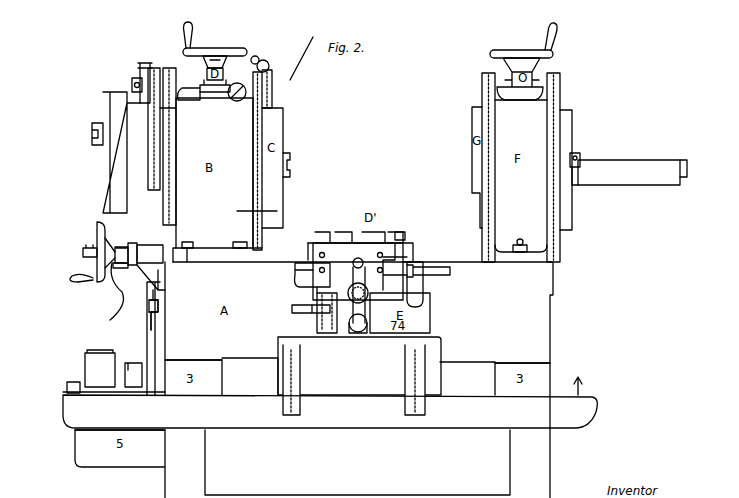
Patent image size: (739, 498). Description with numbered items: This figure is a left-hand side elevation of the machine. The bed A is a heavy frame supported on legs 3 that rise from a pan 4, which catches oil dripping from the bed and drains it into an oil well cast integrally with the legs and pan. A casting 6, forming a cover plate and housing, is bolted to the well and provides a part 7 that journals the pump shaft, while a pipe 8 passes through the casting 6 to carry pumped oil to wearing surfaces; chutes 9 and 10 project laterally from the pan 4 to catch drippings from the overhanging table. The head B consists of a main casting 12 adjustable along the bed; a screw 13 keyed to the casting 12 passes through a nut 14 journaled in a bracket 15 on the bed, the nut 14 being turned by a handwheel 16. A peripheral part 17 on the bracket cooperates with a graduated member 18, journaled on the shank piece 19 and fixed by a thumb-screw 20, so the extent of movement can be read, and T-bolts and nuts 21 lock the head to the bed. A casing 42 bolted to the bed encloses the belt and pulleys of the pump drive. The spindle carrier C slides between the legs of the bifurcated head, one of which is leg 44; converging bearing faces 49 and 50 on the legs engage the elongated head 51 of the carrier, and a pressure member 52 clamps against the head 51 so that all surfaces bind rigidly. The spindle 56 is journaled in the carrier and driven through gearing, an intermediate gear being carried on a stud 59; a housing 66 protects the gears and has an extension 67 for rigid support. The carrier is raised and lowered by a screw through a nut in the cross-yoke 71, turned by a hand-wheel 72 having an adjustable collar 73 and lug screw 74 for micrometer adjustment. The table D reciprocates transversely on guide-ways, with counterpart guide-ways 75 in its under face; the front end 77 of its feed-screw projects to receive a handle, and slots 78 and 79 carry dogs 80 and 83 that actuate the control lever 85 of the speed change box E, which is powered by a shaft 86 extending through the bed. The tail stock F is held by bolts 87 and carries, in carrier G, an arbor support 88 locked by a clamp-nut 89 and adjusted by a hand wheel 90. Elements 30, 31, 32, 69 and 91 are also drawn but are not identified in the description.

The legs 3 is at (357, 361).
The pan 4 is at (578, 381).
The casting 6 is at (73, 382).
The part 7 is at (110, 370).
The pipe 8 is at (135, 360).
The chute 9 is at (121, 254).
The chute 10 is at (359, 376).
The main casting 12 is at (267, 212).
The screw 13 is at (98, 252).
The nut 14 is at (167, 253).
The bracket 15 is at (155, 246).
The handwheel 16 is at (110, 280).
The peripheral part 17 is at (134, 244).
The member 18 is at (120, 247).
The shank piece 19 is at (107, 298).
The thumb-screw 20 is at (123, 270).
The T-bolts and nuts 21 is at (193, 245).
The roller 30 is at (257, 52).
The roller 31 is at (268, 65).
The disc 32 is at (237, 83).
The casing 42 is at (150, 330).
The leg 44 is at (200, 89).
The bearing faces 49 is at (272, 93).
The bearing faces 50 is at (170, 203).
The head 51 is at (280, 127).
The pressure member 52 is at (160, 152).
The spindle 56 is at (290, 162).
The stud 59 is at (92, 140).
The housing 66 is at (103, 108).
The extension 67 is at (146, 64).
The clamp 69 is at (133, 79).
The cross-yoke 71 is at (217, 96).
The hand-wheel 72 is at (228, 44).
The adjustable collar 73 is at (207, 77).
The lug screw 74 is at (206, 62).
The guide-ways 75 is at (347, 293).
The front end 77 is at (347, 300).
The slot 78 is at (393, 313).
The slot 79 is at (407, 236).
The dog 80 is at (413, 250).
The dog 83 is at (414, 284).
The control lever 85 is at (450, 271).
The shaft 86 is at (358, 333).
The bolts 87 is at (524, 233).
The arbor support 88 is at (612, 155).
The clamp-nut 89 is at (580, 155).
The hand wheel 90 is at (518, 52).
The end block 91 is at (687, 165).